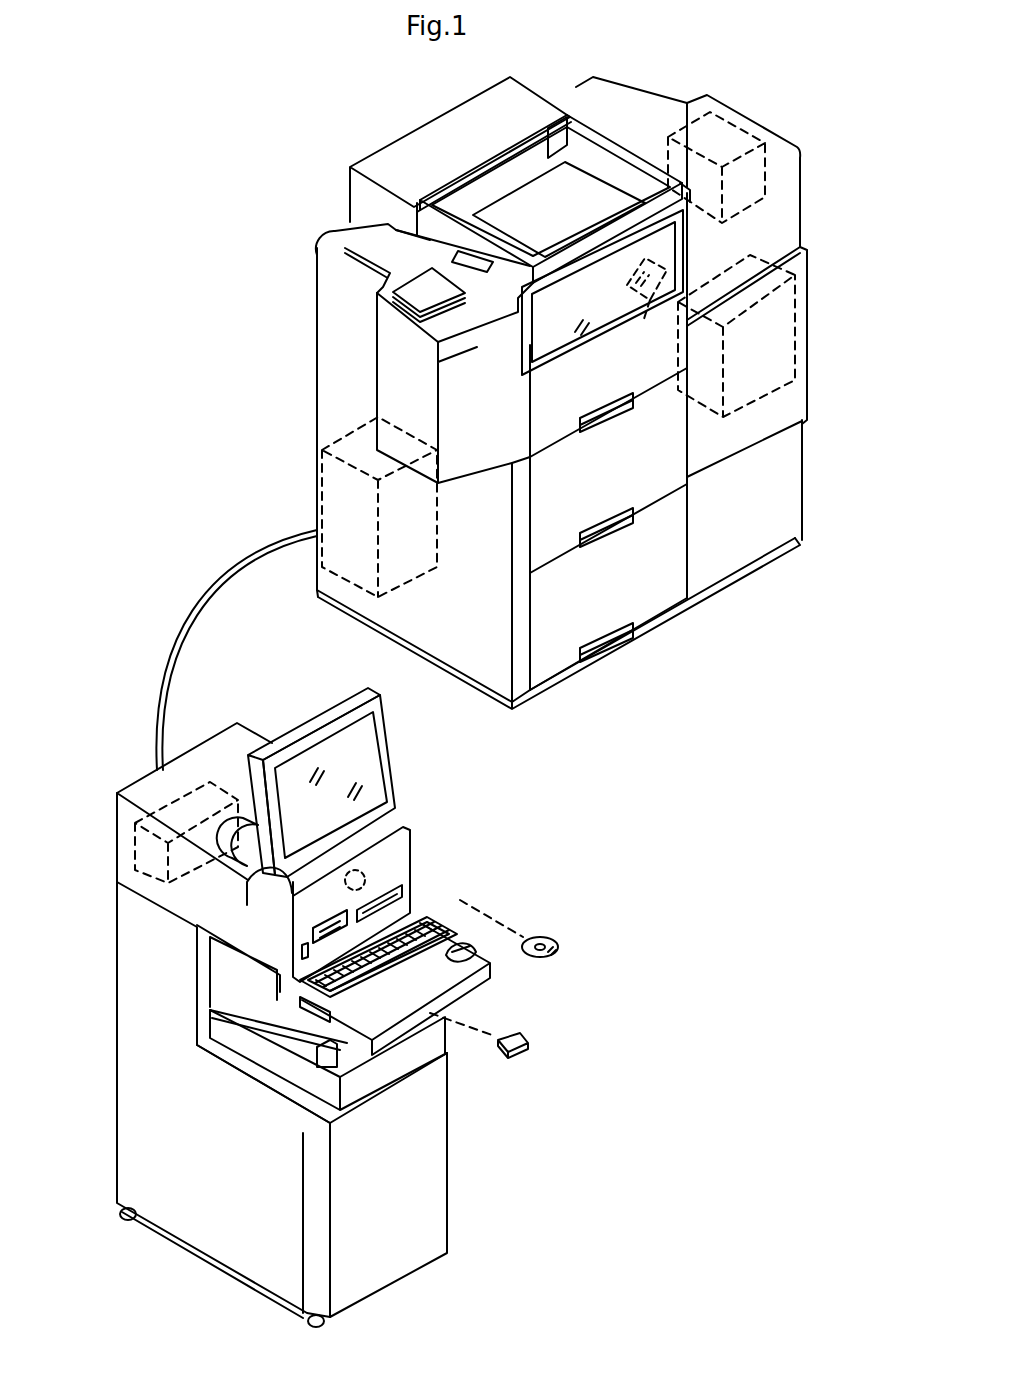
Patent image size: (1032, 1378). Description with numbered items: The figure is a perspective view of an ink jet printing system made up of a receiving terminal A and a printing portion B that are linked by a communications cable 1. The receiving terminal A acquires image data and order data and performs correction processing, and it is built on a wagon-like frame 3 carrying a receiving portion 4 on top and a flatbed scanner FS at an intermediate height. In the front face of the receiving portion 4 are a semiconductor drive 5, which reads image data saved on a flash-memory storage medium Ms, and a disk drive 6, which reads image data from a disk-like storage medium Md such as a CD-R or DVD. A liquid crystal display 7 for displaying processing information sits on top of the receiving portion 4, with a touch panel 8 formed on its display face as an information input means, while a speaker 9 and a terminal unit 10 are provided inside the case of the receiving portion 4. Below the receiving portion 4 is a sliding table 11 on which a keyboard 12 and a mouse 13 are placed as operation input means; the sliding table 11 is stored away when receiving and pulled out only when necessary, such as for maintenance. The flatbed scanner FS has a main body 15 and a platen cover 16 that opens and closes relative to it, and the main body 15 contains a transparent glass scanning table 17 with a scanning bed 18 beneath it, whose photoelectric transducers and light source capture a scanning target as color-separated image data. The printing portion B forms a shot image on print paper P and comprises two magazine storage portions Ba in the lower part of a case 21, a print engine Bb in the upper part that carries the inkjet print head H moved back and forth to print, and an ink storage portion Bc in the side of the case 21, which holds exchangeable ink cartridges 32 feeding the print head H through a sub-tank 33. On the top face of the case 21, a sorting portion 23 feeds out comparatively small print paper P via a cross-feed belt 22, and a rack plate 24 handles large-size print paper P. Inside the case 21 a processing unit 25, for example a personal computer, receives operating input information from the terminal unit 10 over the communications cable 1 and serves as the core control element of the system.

The communications cable 1 is at (220, 587).
The frame 3 is at (133, 1025).
The receiving portion 4 is at (138, 787).
The semiconductor drive 5 is at (325, 925).
The disk drive 6 is at (402, 915).
The liquid crystal display 7 is at (370, 760).
The touch panel 8 is at (331, 785).
The speaker 9 is at (365, 860).
The terminal unit 10 is at (128, 846).
The sliding table 11 is at (468, 985).
The keyboard 12 is at (352, 967).
The mouse 13 is at (462, 952).
The main body 15 is at (393, 1072).
The platen cover 16 is at (245, 995).
The scanning table 17 is at (248, 1035).
The scanning bed 18 is at (367, 1060).
The case 21 is at (305, 390).
The cross-feed belt 22 is at (440, 252).
The sorting portion 23 is at (368, 245).
The rack plate 24 is at (486, 190).
The processing unit 25 is at (322, 447).
The ink cartridges 32 is at (762, 248).
The sub-tank 33 is at (745, 118).
The receiving terminal A is at (135, 733).
The printing portion B is at (840, 188).
The magazine storage portions Ba is at (630, 456).
The print engine Bb is at (652, 332).
The ink storage portion Bc is at (773, 313).
The flatbed scanner FS is at (285, 1067).
The inkjet print head H is at (648, 303).
The disk-like storage medium Md is at (557, 943).
The storage medium Ms is at (522, 1035).
The print paper P is at (570, 177).